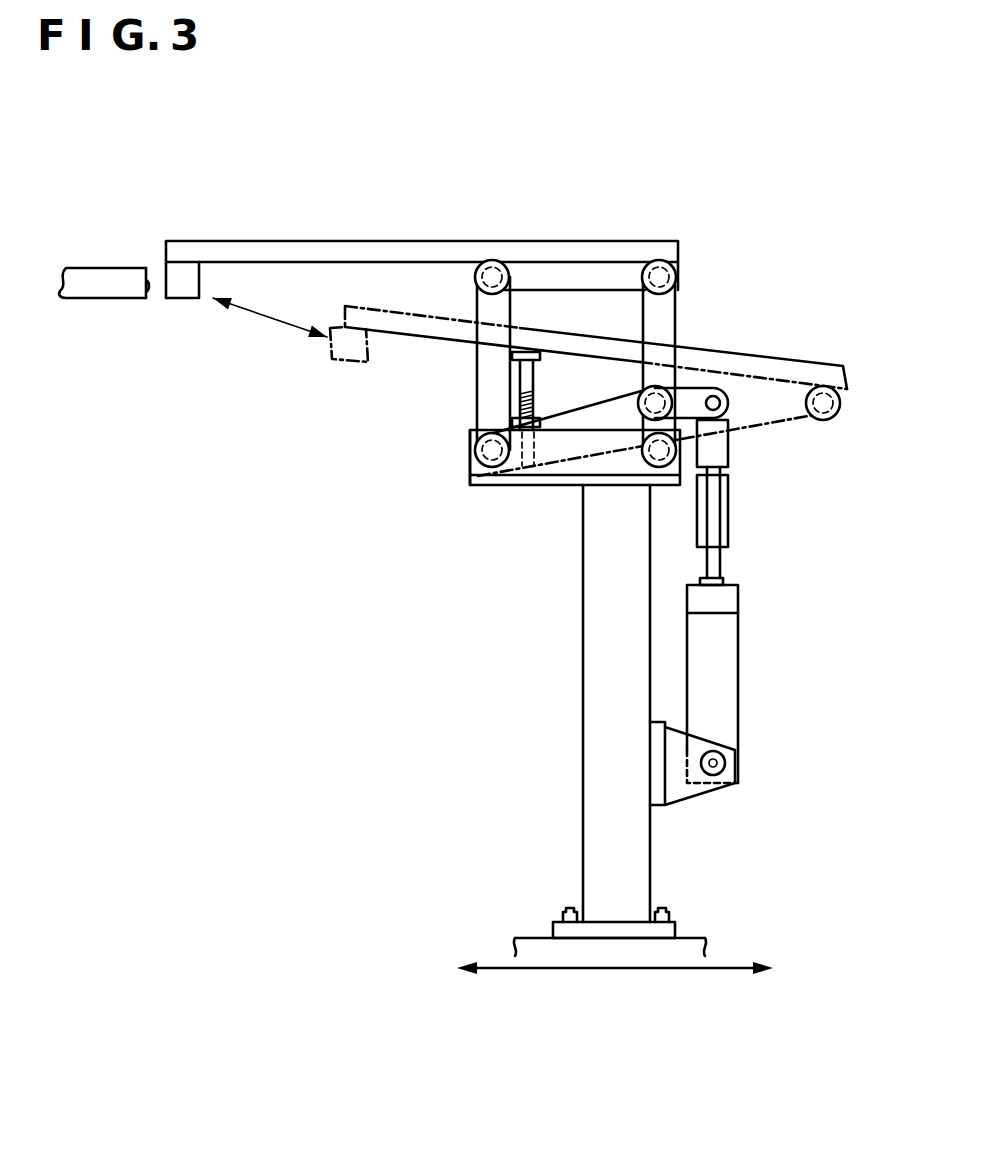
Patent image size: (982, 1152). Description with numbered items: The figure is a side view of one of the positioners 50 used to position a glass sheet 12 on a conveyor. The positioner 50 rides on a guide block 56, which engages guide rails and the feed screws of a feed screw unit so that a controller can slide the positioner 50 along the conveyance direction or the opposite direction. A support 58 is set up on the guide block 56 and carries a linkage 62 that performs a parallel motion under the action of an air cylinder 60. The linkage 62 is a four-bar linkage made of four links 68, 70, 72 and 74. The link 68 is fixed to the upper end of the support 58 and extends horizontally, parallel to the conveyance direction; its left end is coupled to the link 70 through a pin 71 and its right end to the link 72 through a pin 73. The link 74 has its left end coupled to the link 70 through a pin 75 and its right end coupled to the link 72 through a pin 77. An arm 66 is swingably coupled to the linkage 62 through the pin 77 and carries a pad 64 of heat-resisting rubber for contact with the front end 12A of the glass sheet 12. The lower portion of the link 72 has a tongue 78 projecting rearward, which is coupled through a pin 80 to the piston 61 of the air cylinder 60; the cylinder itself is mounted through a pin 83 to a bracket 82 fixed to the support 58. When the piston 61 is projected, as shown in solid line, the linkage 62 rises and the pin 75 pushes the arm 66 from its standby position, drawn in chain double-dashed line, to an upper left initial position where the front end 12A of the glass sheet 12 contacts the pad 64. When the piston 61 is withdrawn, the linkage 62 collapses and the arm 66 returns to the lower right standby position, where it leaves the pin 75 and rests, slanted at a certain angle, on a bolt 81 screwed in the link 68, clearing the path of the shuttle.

The glass sheet 12 is at (91, 265).
The front end of the glass sheet 12A is at (148, 287).
The positioner 50 is at (706, 172).
The guide block 56 is at (530, 943).
The support 58 is at (584, 696).
The air cylinder 60 is at (718, 690).
The piston 61 is at (721, 558).
The linkage 62 is at (445, 416).
The pad 64 is at (184, 292).
The arm 66 is at (435, 242).
The link 68 is at (562, 468).
The link 70 is at (478, 378).
The pin 71 is at (480, 456).
The link 72 is at (667, 318).
The pin 73 is at (658, 467).
The link 74 is at (577, 272).
The pin 75 is at (500, 262).
The pin 77 is at (674, 277).
The tongue 78 is at (720, 388).
The pin 80 is at (720, 398).
The bolt 81 is at (541, 353).
The bracket 82 is at (730, 767).
The pin 83 is at (717, 776).